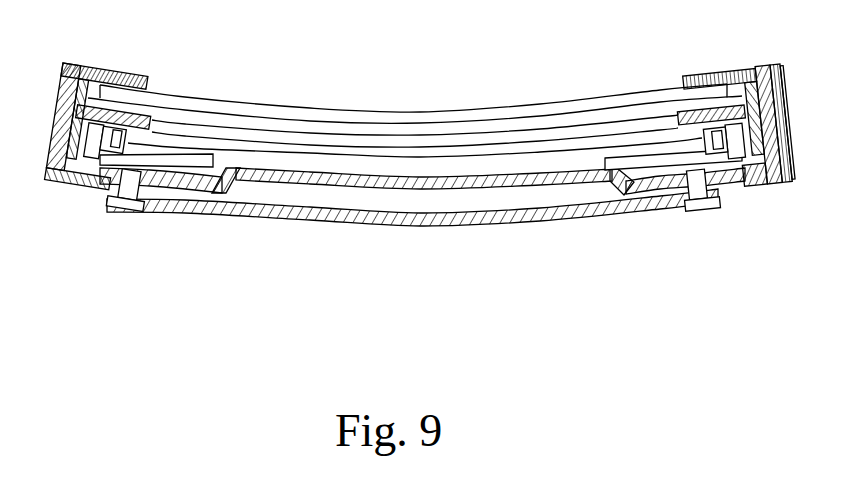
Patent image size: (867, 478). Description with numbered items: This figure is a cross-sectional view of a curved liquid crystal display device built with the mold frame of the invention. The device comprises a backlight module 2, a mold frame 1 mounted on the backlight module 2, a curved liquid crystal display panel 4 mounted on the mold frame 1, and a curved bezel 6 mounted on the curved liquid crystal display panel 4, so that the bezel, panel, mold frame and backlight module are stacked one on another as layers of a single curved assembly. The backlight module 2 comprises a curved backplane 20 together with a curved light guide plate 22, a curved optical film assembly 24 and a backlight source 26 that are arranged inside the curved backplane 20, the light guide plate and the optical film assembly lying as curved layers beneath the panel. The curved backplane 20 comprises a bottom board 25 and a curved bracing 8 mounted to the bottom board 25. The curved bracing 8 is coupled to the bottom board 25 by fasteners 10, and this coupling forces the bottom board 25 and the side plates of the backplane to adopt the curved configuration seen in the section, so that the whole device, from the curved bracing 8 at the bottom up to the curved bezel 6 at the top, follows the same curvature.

The mold frame 1 is at (67, 133).
The backlight module 2 is at (120, 157).
The curved liquid crystal display panel 4 is at (205, 117).
The curved bezel 6 is at (85, 72).
The curved bracing 8 is at (565, 204).
The fasteners 10 is at (698, 192).
The curved backplane 20 is at (214, 186).
The curved light guide plate 22 is at (288, 158).
The curved optical film assembly 24 is at (390, 151).
The bottom board 25 is at (640, 188).
The backlight source 26 is at (716, 136).